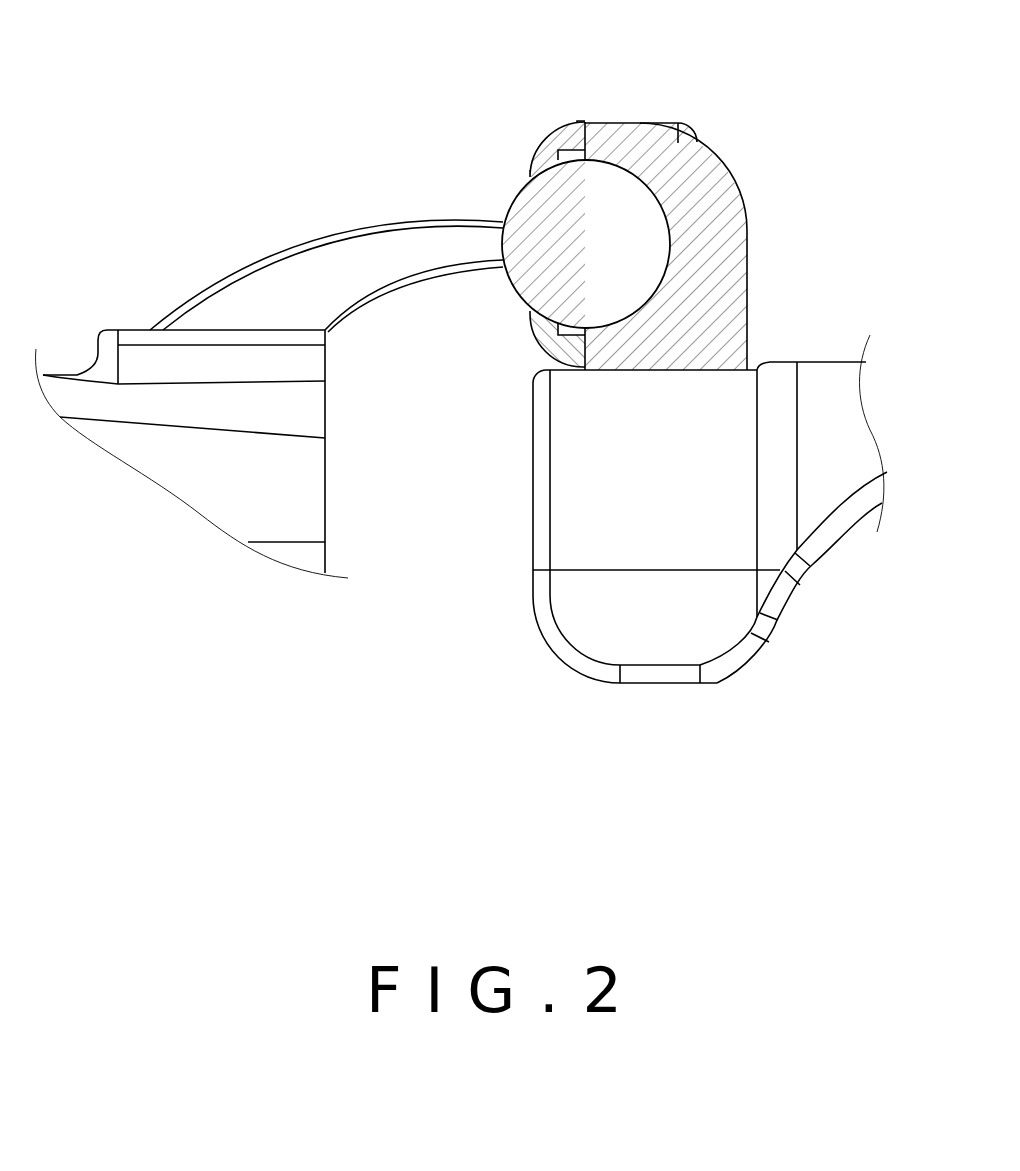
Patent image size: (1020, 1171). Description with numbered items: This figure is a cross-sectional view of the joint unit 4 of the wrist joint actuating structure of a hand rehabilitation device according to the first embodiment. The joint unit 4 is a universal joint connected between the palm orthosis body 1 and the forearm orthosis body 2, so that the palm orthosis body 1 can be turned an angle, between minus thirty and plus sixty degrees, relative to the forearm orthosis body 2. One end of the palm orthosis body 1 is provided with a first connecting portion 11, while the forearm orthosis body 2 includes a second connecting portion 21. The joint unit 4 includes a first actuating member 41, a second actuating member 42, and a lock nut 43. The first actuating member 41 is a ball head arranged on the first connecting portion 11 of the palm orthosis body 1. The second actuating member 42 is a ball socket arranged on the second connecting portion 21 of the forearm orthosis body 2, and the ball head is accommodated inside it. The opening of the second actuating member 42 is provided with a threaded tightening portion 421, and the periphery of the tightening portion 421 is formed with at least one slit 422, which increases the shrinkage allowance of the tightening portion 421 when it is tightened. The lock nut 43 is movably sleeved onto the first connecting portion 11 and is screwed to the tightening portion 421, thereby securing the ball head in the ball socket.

The palm orthosis body 1 is at (203, 452).
The first connecting portion 11 is at (305, 282).
The forearm orthosis body 2 is at (725, 433).
The second connecting portion 21 is at (692, 127).
The joint unit 4 is at (615, 46).
The first actuating member 41 is at (545, 223).
The second actuating member 42 is at (614, 140).
The tightening portion 421 is at (574, 145).
The slit 422 is at (563, 323).
The lock nut 43 is at (547, 150).